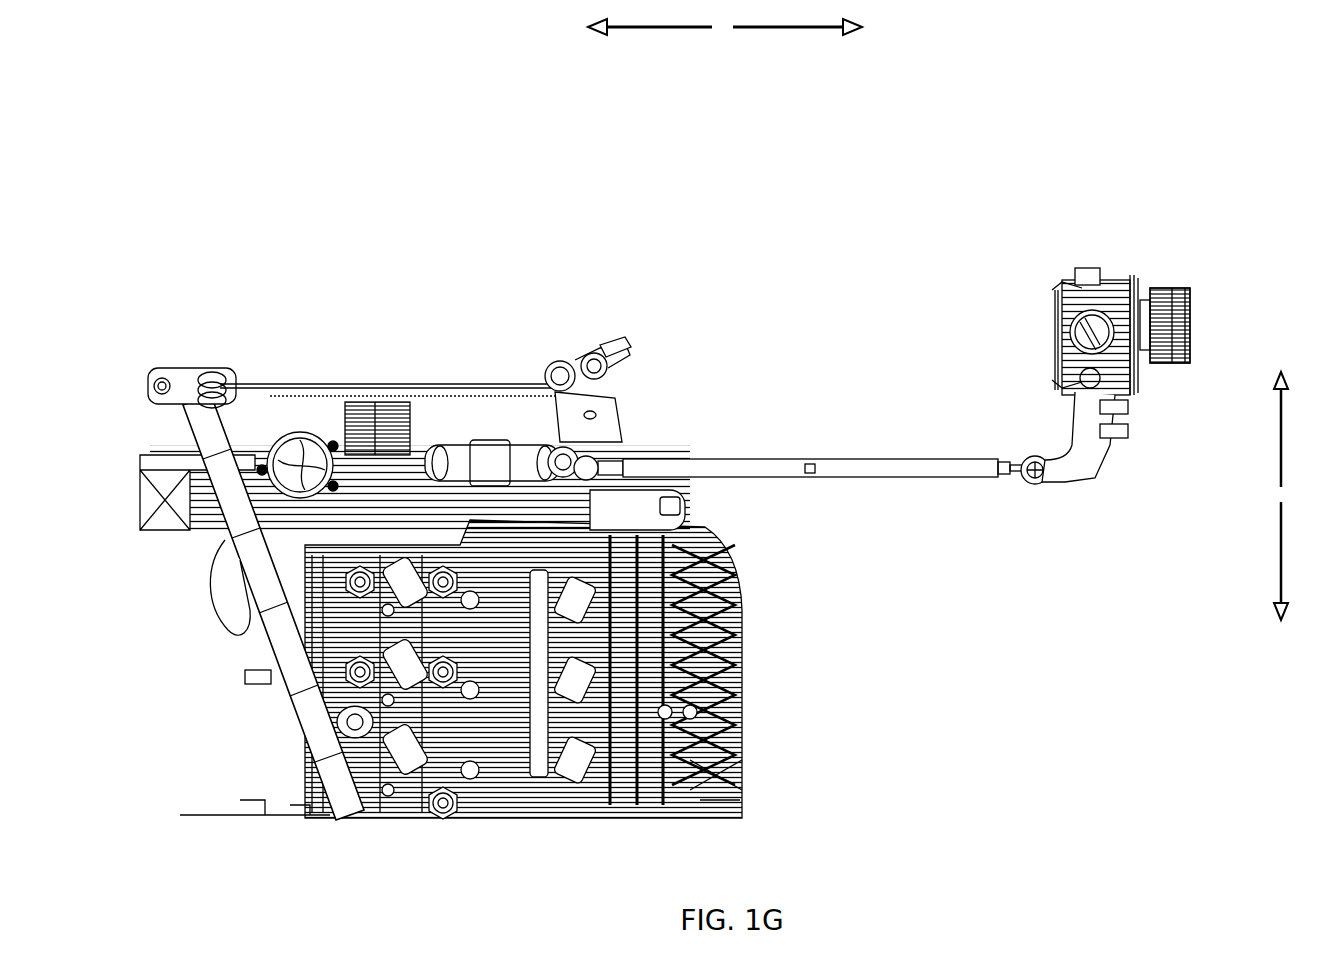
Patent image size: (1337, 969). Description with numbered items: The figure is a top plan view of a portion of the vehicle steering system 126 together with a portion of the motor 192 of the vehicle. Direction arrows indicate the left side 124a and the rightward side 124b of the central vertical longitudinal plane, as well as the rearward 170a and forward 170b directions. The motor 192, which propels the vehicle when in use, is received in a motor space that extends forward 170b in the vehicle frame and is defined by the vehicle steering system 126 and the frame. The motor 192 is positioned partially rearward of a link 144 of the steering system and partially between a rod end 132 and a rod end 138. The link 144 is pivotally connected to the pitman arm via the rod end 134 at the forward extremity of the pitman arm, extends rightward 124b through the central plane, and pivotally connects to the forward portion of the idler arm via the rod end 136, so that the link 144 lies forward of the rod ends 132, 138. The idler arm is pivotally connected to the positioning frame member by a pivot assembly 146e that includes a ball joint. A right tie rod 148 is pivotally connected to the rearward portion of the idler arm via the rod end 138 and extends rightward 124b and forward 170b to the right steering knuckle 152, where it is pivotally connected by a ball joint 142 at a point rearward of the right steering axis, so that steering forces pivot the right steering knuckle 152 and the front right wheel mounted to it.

The left side 124a is at (652, 27).
The rightward side 124b is at (784, 27).
The vehicle steering system 126 is at (130, 226).
The rod end 132 is at (140, 392).
The rod end 134 is at (197, 392).
The rod end 136 is at (552, 385).
The rod end 138 is at (592, 458).
The ball joint 142 is at (1012, 462).
The link 144 is at (380, 392).
The pivot assembly 146e is at (583, 345).
The right tie rod 148 is at (848, 462).
The right steering knuckle 152 is at (1097, 300).
The rearward 170a is at (1281, 552).
The forward 170b is at (1281, 440).
The motor 192 is at (745, 780).